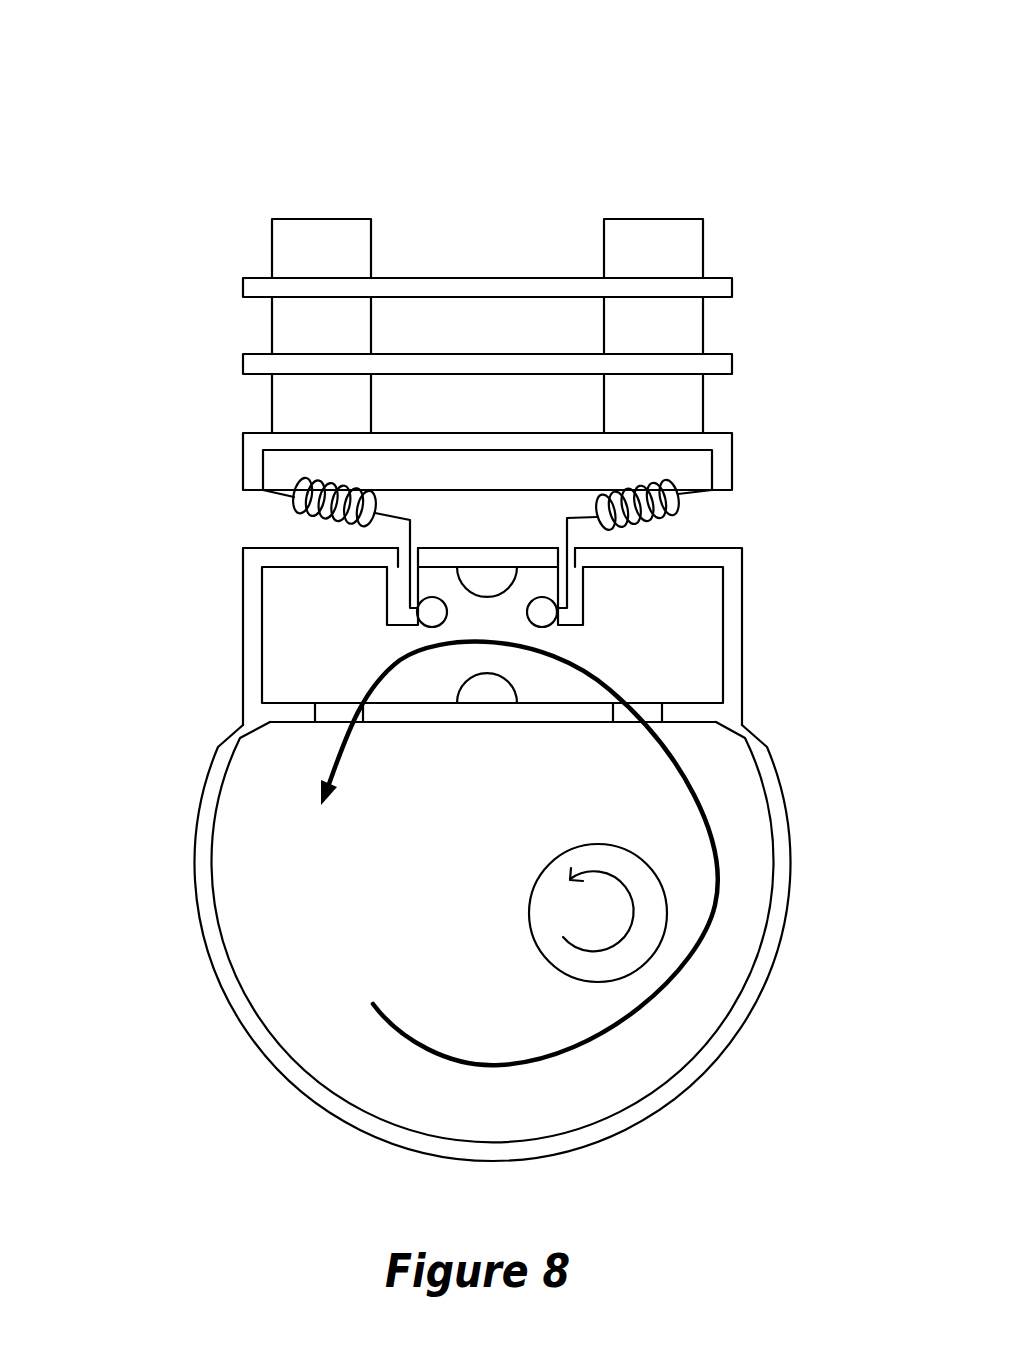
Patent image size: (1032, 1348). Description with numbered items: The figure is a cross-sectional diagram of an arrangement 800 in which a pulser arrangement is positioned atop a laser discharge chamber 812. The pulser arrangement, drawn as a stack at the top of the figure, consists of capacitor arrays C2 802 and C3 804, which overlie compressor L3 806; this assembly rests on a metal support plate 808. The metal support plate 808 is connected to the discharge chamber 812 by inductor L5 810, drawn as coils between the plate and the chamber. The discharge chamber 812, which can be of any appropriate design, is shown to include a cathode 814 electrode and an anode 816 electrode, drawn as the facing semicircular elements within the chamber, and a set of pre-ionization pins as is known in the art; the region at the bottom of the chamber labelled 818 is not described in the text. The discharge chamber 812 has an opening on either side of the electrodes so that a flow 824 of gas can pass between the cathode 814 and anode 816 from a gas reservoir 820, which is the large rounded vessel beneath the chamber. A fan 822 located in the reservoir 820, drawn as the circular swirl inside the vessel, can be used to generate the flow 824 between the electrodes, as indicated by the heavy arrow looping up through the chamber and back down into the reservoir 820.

The arrangement 800 is at (702, 123).
The capacitor array C2 802 is at (747, 208).
The capacitor array C3 804 is at (752, 300).
The compressor L3 806 is at (670, 412).
The metal support plate 808 is at (253, 440).
The inductor L5 810 is at (283, 506).
The laser discharge chamber 812 is at (728, 610).
The cathode electrode 814 is at (490, 578).
The anode electrode 816 is at (495, 695).
The valve seat with balls 818 is at (407, 614).
The gas reservoir 820 is at (205, 912).
The fan 822 is at (640, 943).
The flow 824 is at (389, 1006).